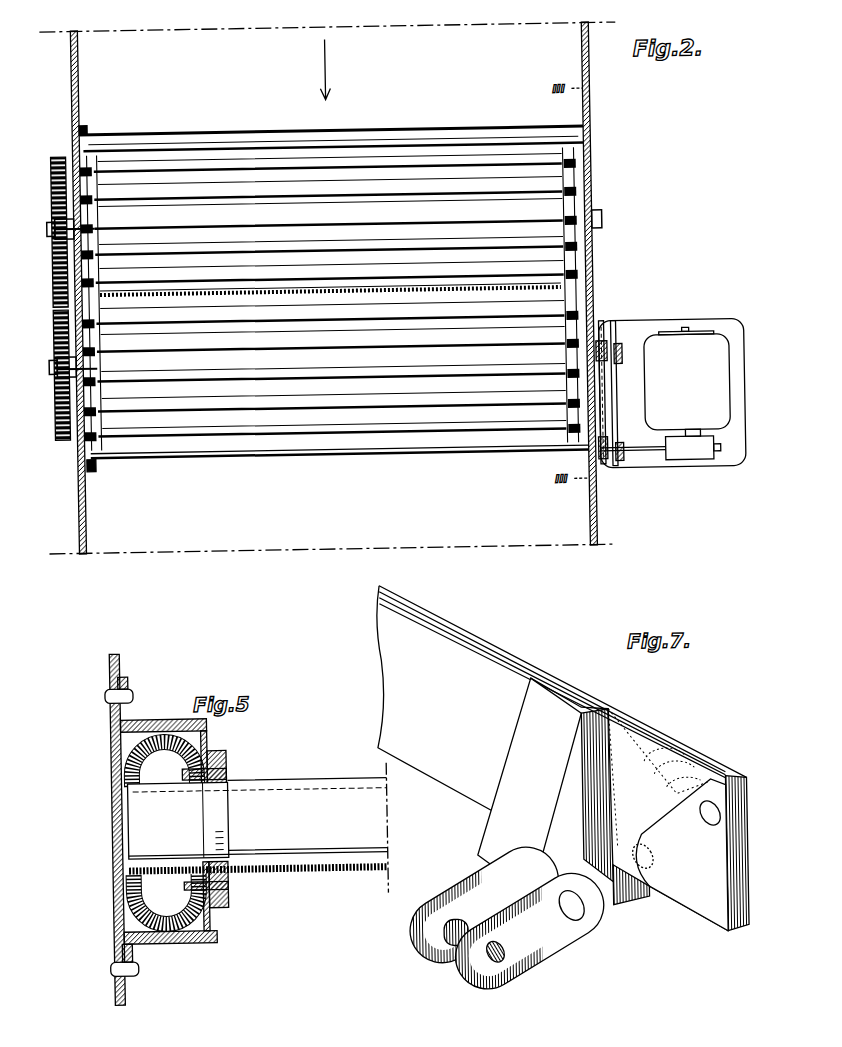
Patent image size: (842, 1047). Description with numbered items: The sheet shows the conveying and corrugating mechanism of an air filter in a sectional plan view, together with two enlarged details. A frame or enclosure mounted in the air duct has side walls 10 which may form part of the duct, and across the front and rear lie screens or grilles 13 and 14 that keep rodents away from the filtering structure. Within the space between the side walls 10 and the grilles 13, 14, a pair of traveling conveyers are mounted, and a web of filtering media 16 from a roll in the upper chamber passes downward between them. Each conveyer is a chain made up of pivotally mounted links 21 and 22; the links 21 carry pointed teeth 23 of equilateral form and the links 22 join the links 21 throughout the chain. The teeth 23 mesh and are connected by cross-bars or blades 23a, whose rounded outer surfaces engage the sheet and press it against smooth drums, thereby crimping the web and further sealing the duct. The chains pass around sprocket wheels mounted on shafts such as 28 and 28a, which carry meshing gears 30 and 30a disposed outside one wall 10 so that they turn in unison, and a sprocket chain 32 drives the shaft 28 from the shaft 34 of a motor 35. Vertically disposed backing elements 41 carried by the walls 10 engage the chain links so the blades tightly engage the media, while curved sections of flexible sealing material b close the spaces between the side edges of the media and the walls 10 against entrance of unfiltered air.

In FIG. 2, the side walls 10 is at (79, 133).
In FIG. 5, the side walls 10 is at (110, 837).
In FIG. 2, the screen or grille 13 is at (246, 130).
In FIG. 2, the screen or grille 14 is at (457, 453).
In FIG. 2, the roll of filtering media 16 is at (330, 297).
In FIG. 5, the roll of filtering media 16 is at (279, 870).
In FIG. 5, the pointed teeth 23 is at (216, 815).
In FIG. 7, the pointed teeth 23 is at (492, 821).
In FIG. 2, the cross-bars or blades 23a is at (405, 354).
In FIG. 5, the cross-bars or blades 23a is at (312, 794).
In FIG. 7, the cross-bars or blades 23a is at (562, 757).
In FIG. 2, the flexible sealing material b is at (80, 203).
In FIG. 5, the flexible sealing material b is at (107, 751).
In FIG. 2, the shaft 28 is at (52, 226).
In FIG. 2, the shaft 28a is at (52, 360).
In FIG. 2, the gear 30 is at (58, 266).
In FIG. 2, the gear 30a is at (58, 400).
In FIG. 2, the sprocket chain 32 is at (613, 420).
In FIG. 2, the motor shaft 34 is at (620, 448).
In FIG. 2, the motor 35 is at (687, 378).
In FIG. 5, the backing elements 41 is at (175, 717).
In FIG. 7, the links 21 is at (618, 903).
In FIG. 7, the links 22 is at (450, 970).